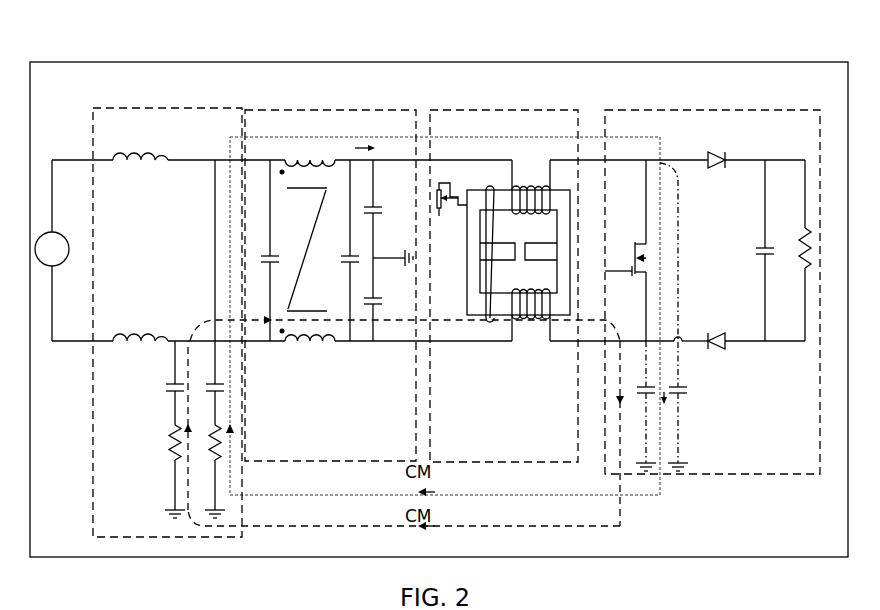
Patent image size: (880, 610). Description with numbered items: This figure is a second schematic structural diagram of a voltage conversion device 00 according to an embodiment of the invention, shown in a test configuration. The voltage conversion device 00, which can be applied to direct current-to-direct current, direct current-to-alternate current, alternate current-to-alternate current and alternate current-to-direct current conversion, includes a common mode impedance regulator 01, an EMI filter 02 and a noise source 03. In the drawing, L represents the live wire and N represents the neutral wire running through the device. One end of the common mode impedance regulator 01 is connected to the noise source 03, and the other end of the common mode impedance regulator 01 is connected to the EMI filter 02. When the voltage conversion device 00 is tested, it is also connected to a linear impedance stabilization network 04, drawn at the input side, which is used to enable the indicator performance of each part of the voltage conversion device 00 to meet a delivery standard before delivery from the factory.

The voltage conversion device 00 is at (585, 62).
The common mode impedance regulator 01 is at (460, 108).
The EMI filter 02 is at (292, 108).
The noise source 03 is at (673, 108).
The linear impedance stabilization network 04 is at (142, 108).